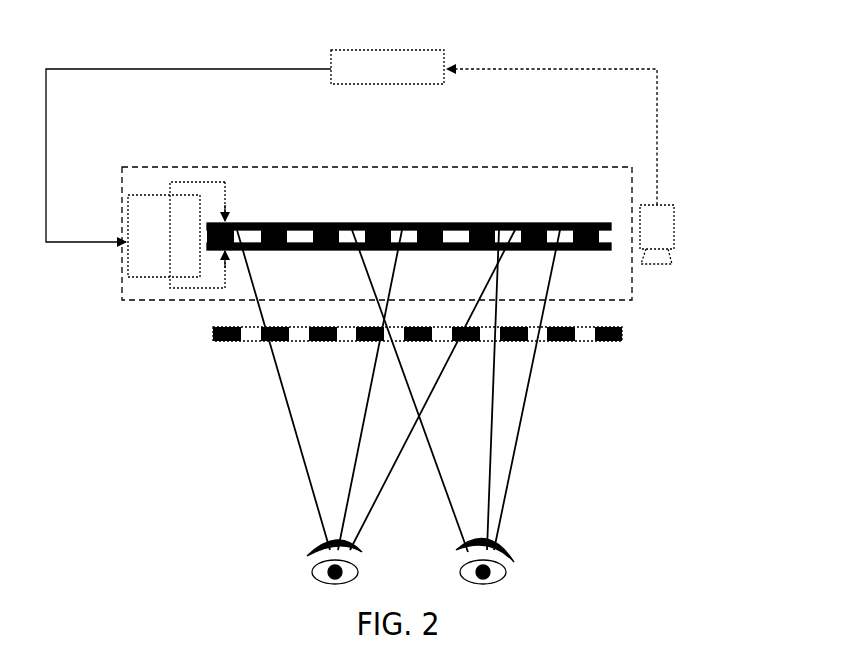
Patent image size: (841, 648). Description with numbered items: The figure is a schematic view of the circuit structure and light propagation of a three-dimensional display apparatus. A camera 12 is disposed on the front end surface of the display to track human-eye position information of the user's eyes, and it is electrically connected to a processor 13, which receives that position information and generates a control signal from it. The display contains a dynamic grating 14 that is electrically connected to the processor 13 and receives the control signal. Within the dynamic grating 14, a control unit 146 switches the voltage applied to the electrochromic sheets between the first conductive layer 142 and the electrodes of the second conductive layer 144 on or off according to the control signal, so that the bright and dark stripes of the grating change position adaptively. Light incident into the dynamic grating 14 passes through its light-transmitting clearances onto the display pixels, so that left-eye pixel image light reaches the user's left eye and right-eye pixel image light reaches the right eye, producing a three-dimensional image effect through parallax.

The camera 12 is at (676, 228).
The processor 13 is at (430, 50).
The dynamic grating 14 is at (118, 309).
The first conductive layer 142 is at (548, 222).
The second conductive layer 144 is at (535, 250).
The control unit 146 is at (133, 258).